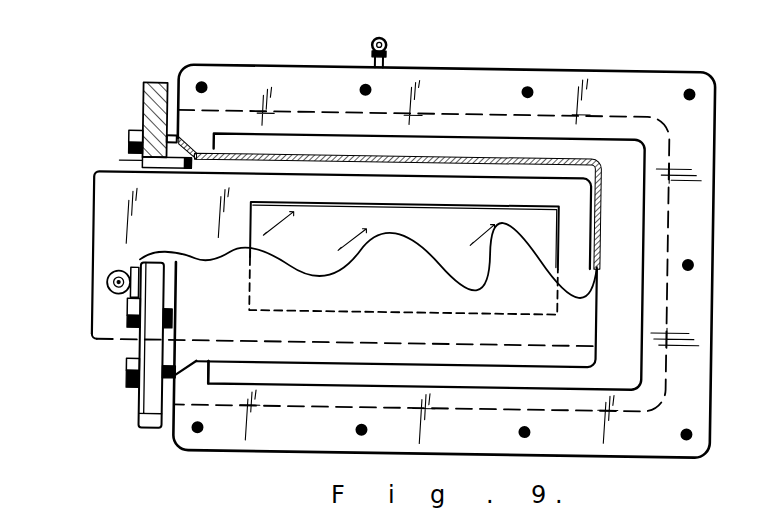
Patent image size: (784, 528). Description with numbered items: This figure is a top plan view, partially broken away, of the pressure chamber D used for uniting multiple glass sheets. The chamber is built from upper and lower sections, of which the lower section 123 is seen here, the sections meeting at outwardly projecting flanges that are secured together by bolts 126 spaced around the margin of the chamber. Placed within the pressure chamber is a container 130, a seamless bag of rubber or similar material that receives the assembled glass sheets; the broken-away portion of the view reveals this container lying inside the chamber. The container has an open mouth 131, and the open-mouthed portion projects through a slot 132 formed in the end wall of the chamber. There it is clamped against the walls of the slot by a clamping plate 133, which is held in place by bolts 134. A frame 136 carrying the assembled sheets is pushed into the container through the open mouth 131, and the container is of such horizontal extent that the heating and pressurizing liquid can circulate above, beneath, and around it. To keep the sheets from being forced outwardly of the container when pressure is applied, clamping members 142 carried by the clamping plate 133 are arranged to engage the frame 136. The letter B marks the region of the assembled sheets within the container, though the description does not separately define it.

The lower section of the pressure chamber 123 is at (712, 150).
The bolts 126 is at (530, 88).
The container 130 is at (600, 208).
The open mouth 131 is at (190, 167).
The slot 132 is at (194, 371).
The clamping plate 133 is at (152, 407).
The bolts 134 is at (129, 140).
The frame 136 is at (106, 215).
The clamping members 142 is at (108, 290).
The pressure chamber D is at (611, 67).
The window B is at (519, 220).